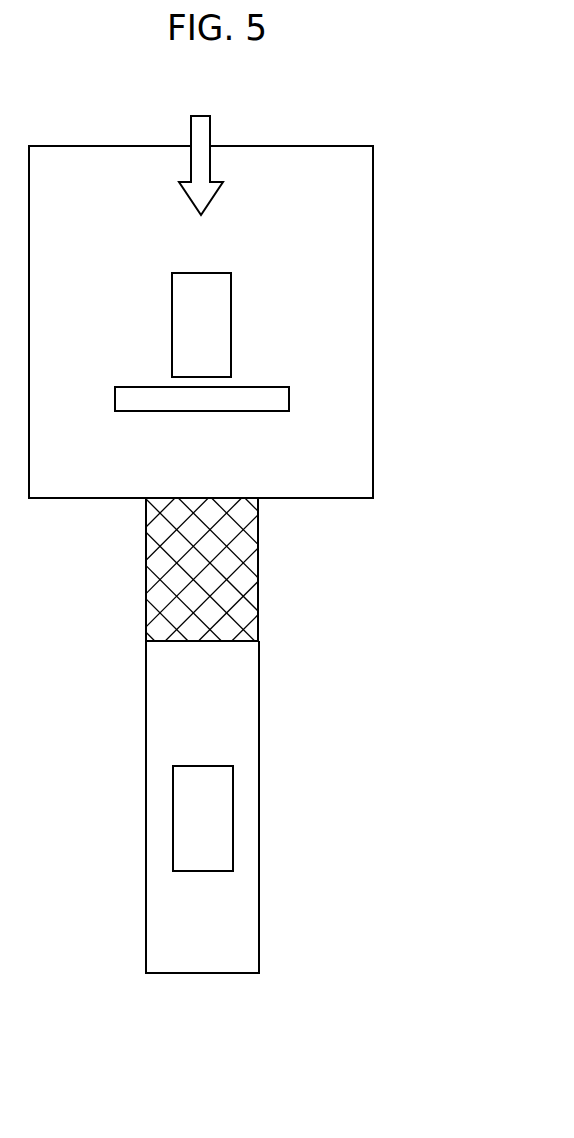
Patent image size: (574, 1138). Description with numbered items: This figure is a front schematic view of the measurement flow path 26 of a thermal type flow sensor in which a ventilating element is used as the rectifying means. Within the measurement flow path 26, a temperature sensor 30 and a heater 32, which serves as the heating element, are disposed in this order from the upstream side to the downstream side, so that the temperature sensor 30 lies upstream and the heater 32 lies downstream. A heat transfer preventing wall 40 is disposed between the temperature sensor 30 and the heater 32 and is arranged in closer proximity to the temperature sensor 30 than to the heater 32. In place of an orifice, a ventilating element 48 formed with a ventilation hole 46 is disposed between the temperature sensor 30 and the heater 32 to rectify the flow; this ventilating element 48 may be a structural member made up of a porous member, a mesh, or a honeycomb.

The measurement flow path 26 is at (373, 277).
The temperature sensor 30 is at (183, 313).
The heat transfer preventing wall 40 is at (130, 399).
The ventilation hole 46 is at (184, 516).
The ventilating element 48 is at (242, 576).
The heater 32 is at (217, 810).